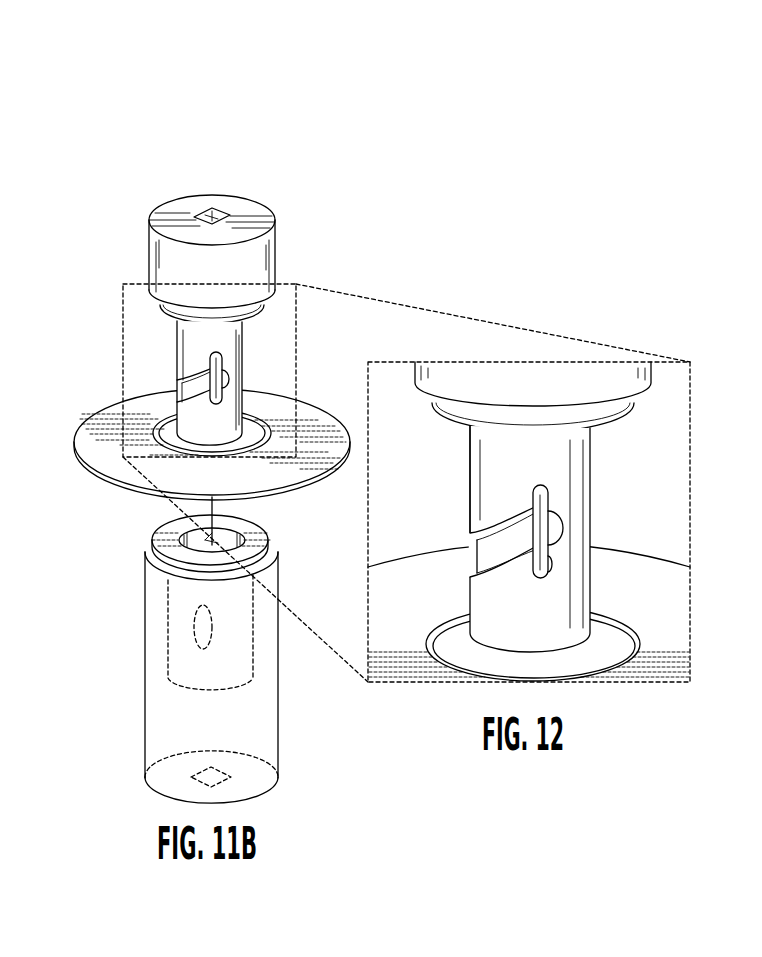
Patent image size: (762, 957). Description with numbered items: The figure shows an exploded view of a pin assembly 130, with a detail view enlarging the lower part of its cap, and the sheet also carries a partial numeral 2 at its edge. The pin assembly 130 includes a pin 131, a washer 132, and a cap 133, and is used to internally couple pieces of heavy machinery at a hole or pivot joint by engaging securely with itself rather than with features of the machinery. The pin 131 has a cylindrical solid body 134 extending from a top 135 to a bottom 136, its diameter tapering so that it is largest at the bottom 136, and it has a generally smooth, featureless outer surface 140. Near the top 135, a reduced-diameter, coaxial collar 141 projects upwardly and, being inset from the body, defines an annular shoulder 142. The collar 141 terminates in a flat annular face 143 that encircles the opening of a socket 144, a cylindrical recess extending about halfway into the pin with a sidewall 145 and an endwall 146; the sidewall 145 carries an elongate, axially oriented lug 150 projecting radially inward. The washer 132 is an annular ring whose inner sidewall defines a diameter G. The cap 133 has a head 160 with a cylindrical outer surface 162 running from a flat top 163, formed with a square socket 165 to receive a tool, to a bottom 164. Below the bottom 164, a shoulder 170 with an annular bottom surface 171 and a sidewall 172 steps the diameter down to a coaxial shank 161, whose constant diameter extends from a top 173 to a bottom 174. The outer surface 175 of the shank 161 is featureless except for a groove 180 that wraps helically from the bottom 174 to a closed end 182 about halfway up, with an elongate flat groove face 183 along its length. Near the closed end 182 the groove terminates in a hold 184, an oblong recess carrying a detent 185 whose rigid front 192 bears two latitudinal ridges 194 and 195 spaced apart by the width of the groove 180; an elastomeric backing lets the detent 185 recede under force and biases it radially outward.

In FIG. 11B, the device 2 is at (4, 379).
In FIG. 11B, the pin assembly 130 is at (345, 212).
In FIG. 11B, the pin 131 is at (143, 725).
In FIG. 11B, the washer 132 is at (81, 463).
In FIG. 11B, the cap 133 is at (148, 232).
In FIG. 11B, the cylindrical solid body 134 is at (146, 665).
In FIG. 11B, the top 135 is at (147, 554).
In FIG. 11B, the bottom 136 is at (143, 780).
In FIG. 11B, the outer surface 140 is at (262, 752).
In FIG. 11B, the collar 141 is at (257, 563).
In FIG. 11B, the annular shoulder 142 is at (252, 560).
In FIG. 11B, the annular face 143 is at (243, 530).
In FIG. 11B, the socket 144 is at (212, 535).
In FIG. 11B, the sidewall 145 is at (256, 655).
In FIG. 11B, the endwall 146 is at (238, 692).
In FIG. 11B, the lug 150 is at (195, 631).
In FIG. 11B, the head 160 is at (278, 258).
In FIG. 11B, the shank 161 is at (250, 407).
In FIG. 12, the shank 161 is at (585, 603).
In FIG. 11B, the cylindrical outer surface 162 is at (171, 280).
In FIG. 11B, the top 163 is at (268, 205).
In FIG. 11B, the bottom 164 is at (160, 309).
In FIG. 11B, the square socket 165 is at (217, 210).
In FIG. 11B, the shoulder 170 is at (160, 323).
In FIG. 12, the shoulder 170 is at (640, 401).
In FIG. 11B, the annular bottom surface 171 is at (250, 320).
In FIG. 12, the annular bottom surface 171 is at (606, 430).
In FIG. 11B, the sidewall 172 is at (260, 303).
In FIG. 12, the sidewall 172 is at (622, 422).
In FIG. 12, the top 173 is at (466, 430).
In FIG. 11B, the bottom 174 is at (150, 457).
In FIG. 12, the bottom 174 is at (470, 640).
In FIG. 12, the outer surface 175 is at (512, 502).
In FIG. 11B, the groove 180 is at (177, 393).
In FIG. 12, the groove 180 is at (465, 560).
In FIG. 12, the closed end 182 is at (562, 522).
In FIG. 12, the groove face 183 is at (470, 540).
In FIG. 12, the hold 184 is at (552, 575).
In FIG. 12, the detent 185 is at (542, 582).
In FIG. 12, the front 192 is at (545, 487).
In FIG. 12, the latitudinal ridge 194 is at (550, 500).
In FIG. 12, the latitudinal ridge 195 is at (551, 560).
In FIG. 11B, the diameter G is at (270, 427).